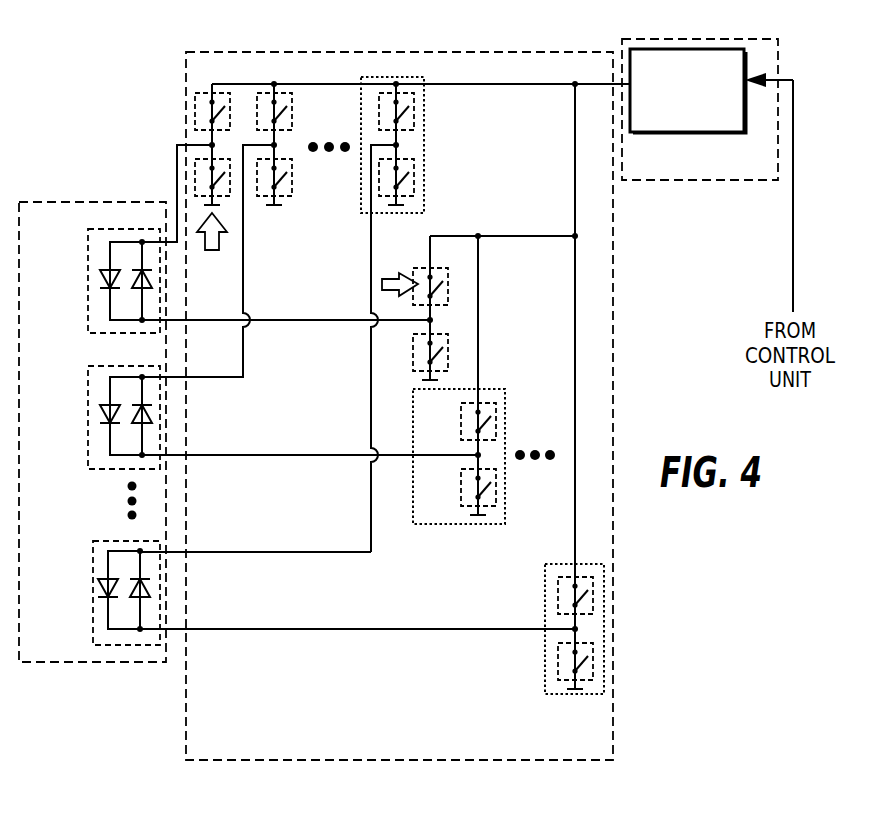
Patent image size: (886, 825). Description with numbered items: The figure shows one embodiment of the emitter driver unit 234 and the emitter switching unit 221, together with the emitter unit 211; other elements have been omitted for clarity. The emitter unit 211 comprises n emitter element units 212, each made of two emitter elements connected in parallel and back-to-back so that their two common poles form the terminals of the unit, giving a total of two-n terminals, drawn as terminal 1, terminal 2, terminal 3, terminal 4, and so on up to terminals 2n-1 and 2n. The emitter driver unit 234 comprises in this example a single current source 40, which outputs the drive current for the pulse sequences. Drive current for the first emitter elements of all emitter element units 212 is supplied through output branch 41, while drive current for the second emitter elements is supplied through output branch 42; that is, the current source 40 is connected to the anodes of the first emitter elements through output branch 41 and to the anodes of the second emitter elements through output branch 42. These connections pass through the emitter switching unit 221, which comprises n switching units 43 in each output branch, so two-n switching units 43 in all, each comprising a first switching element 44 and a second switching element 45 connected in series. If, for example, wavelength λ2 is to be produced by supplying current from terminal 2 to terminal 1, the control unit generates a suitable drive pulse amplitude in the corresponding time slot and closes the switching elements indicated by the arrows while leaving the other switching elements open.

The emitter switching unit 221 is at (242, 52).
The emitter unit 211 is at (75, 201).
The emitter element unit 212 is at (85, 277).
The emitter driver unit 234 is at (672, 38).
The current source 40 is at (700, 134).
The output branch 41 is at (476, 97).
The output branch 42 is at (516, 215).
The switching unit 43 is at (426, 138).
The first switching element 44 is at (292, 113).
The second switching element 45 is at (292, 181).
The terminal 1 is at (177, 193).
The terminal 2 is at (286, 308).
The terminal 3 is at (208, 262).
The terminal 4 is at (310, 442).
The terminal 2n-1 is at (255, 541).
The terminal 2n is at (357, 619).